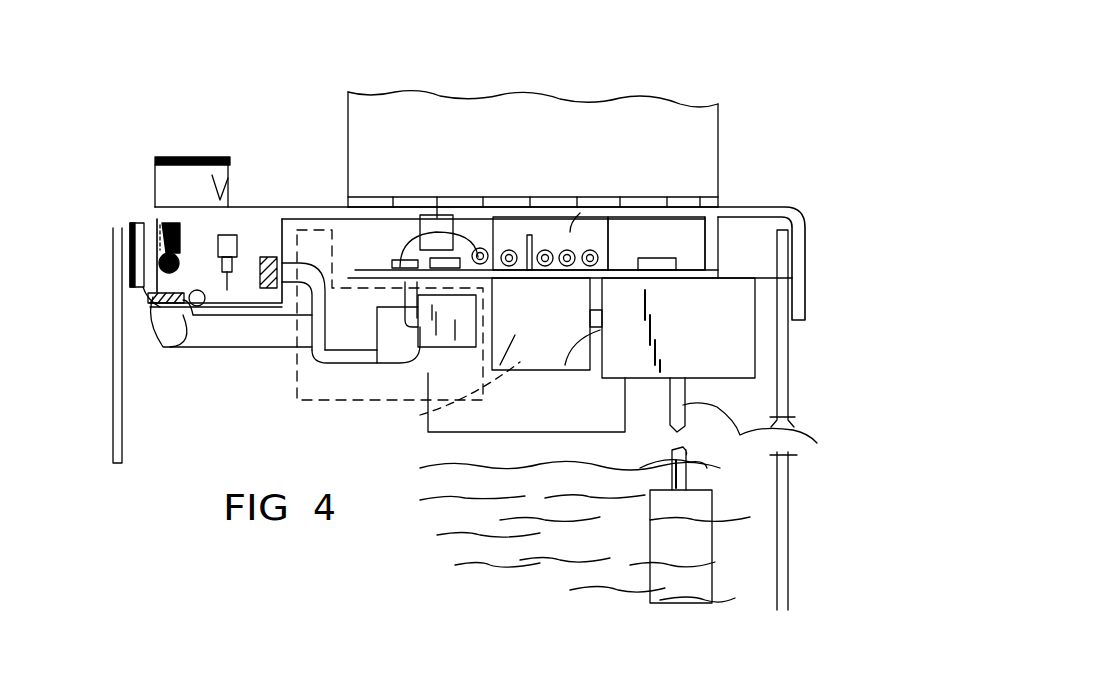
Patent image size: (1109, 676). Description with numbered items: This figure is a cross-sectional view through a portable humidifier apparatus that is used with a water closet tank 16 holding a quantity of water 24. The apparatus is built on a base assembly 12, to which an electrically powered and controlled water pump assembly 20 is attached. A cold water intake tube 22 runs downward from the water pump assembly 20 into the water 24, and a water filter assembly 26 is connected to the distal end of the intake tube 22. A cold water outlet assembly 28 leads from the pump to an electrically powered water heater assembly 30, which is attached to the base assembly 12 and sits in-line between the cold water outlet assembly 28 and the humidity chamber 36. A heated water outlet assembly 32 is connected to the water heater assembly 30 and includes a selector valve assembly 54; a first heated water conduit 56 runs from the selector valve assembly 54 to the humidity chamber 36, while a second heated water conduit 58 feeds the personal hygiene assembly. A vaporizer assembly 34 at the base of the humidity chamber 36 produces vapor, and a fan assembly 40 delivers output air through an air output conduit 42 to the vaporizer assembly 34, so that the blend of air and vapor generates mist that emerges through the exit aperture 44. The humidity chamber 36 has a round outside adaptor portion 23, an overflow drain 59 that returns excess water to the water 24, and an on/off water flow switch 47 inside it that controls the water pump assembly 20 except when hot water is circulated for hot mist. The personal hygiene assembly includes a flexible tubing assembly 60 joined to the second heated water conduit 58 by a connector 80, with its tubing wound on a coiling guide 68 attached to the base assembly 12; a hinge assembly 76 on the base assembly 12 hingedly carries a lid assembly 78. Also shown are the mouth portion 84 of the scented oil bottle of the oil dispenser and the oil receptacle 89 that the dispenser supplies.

The base assembly 12 is at (792, 220).
The water closet tank 16 is at (785, 387).
The water pump assembly 20 is at (723, 340).
The cold water intake tube 22 is at (764, 506).
The outside adaptor portion 23 is at (238, 172).
The water 24 is at (622, 540).
The water filter assembly 26 is at (693, 557).
The cold water outlet assembly 28 is at (590, 320).
The water heater assembly 30 is at (432, 425).
The heated water outlet assembly 32 is at (305, 400).
The vaporizer assembly 34 is at (147, 282).
The humidity chamber 36 is at (158, 310).
The fan assembly 40 is at (520, 413).
The air output conduit 42 is at (245, 340).
The exit aperture 44 is at (190, 157).
The on/off water flow switch 47 is at (237, 245).
The selector valve assembly 54 is at (390, 400).
The first heated water conduit 56 is at (320, 365).
The second heated water conduit 58 is at (377, 307).
The overflow drain 59 is at (120, 437).
The flexible tubing assembly 60 is at (437, 207).
The coiling guide 68 is at (532, 240).
The hinge assembly 76 is at (697, 200).
The lid assembly 78 is at (680, 130).
The connector 80 is at (465, 187).
The mouth portion 84 is at (580, 213).
The oil receptacle 89 is at (158, 256).